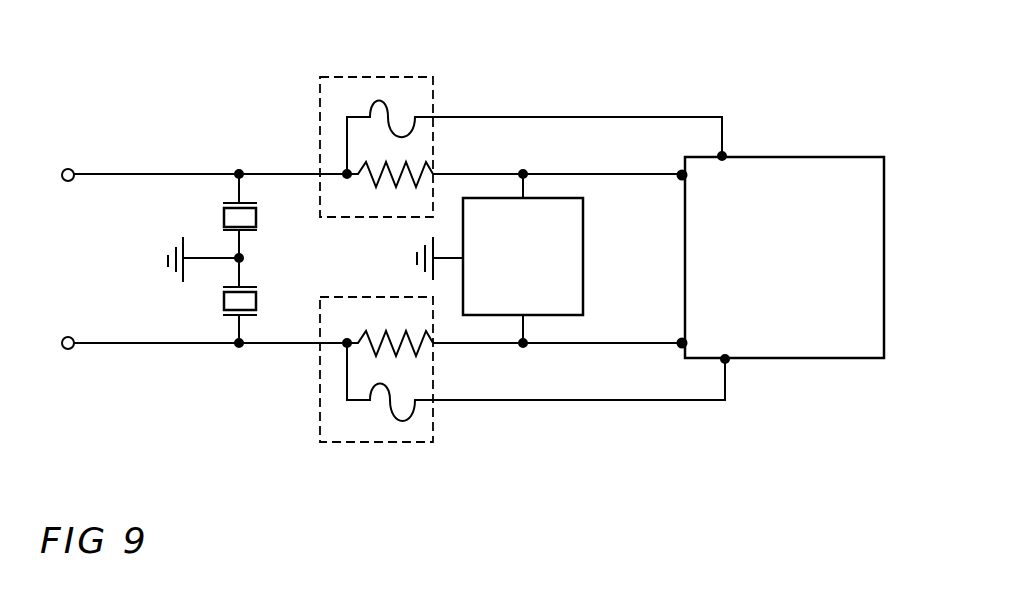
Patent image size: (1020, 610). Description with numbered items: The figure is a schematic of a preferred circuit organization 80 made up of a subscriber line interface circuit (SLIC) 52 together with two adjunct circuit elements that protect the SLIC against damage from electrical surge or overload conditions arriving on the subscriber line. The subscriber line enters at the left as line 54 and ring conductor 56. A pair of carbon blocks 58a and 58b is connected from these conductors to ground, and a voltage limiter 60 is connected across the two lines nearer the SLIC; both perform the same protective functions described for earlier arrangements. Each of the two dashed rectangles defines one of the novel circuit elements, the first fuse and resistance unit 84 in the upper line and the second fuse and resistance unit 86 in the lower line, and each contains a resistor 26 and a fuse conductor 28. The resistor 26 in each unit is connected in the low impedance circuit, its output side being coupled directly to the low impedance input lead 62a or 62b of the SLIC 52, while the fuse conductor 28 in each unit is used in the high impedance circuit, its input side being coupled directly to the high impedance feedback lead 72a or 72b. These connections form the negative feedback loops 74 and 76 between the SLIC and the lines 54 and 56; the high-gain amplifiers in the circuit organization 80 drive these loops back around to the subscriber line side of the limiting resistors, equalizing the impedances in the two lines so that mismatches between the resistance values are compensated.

The resistor 26 is at (384, 185).
The fuse conductor 28 is at (393, 103).
The subscriber line interface circuit 52 is at (843, 342).
The line 54 is at (185, 172).
The ring conductor 56 is at (184, 346).
The carbon block 58a is at (247, 217).
The carbon block 58b is at (249, 303).
The voltage limiter 60 is at (578, 248).
The low impedance input lead 62a is at (681, 172).
The low impedance input lead 62b is at (682, 347).
The high impedance feedback lead 72a is at (726, 153).
The high impedance negative feedback lead 72b is at (728, 363).
The negative feedback loop 74 is at (622, 116).
The negative feedback loop 76 is at (622, 402).
The circuit organization 80 is at (250, 437).
The first fuse and resistance unit 84 is at (434, 76).
The second fuse and resistance unit 86 is at (410, 442).